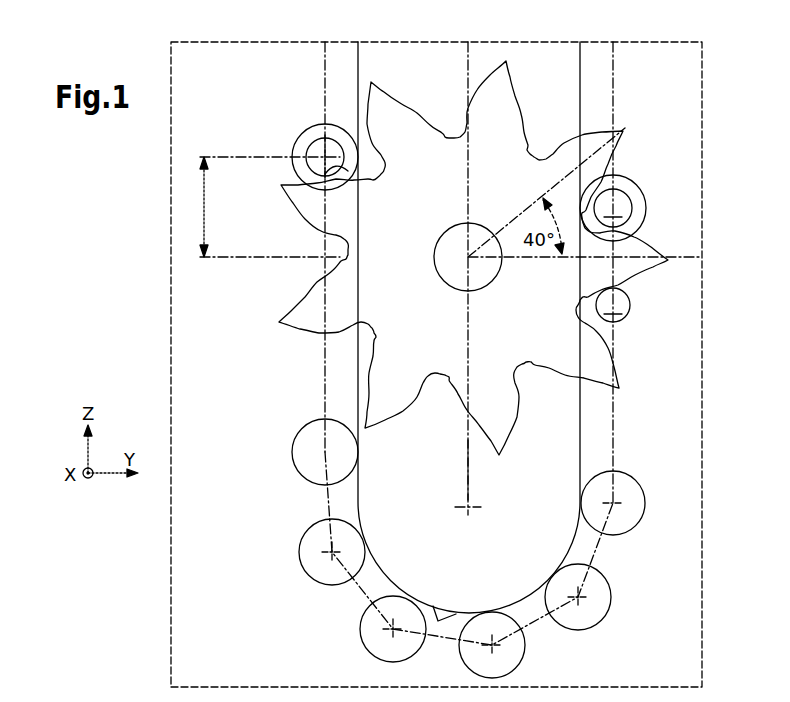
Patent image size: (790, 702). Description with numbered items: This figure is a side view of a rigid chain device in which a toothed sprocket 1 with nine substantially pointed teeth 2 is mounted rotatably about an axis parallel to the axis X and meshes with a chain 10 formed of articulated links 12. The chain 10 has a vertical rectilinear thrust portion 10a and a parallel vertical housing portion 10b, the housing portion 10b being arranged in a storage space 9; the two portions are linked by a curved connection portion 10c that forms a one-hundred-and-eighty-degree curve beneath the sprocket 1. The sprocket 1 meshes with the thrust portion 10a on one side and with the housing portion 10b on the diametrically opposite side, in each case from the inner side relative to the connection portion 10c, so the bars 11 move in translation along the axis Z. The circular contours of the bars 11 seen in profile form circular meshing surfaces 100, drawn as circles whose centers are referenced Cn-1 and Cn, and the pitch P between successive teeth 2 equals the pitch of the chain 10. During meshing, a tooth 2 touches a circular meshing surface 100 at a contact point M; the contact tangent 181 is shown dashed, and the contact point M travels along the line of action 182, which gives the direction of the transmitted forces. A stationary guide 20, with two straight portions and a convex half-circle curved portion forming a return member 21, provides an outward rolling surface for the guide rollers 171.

The toothed sprocket 1 is at (519, 320).
The tooth 2 is at (505, 420).
The storage space 9 is at (595, 55).
The chain 10 is at (629, 464).
The thrust portion 10a is at (316, 70).
The housing portion 10b is at (624, 78).
The connection portion 10c is at (536, 632).
The bar 11 is at (613, 252).
The link 12 is at (598, 547).
The stationary guide 20 is at (364, 582).
The return member 21 is at (438, 612).
The circular meshing surface 100 is at (630, 317).
The guide roller 171 is at (646, 200).
The contact tangent 181 is at (298, 211).
The line of action 182 is at (327, 258).
The center of circular meshing surface Cn is at (337, 221).
The center of circular meshing surface Cn-1 is at (325, 353).
The contact point M is at (331, 173).
The pitch P is at (198, 207).